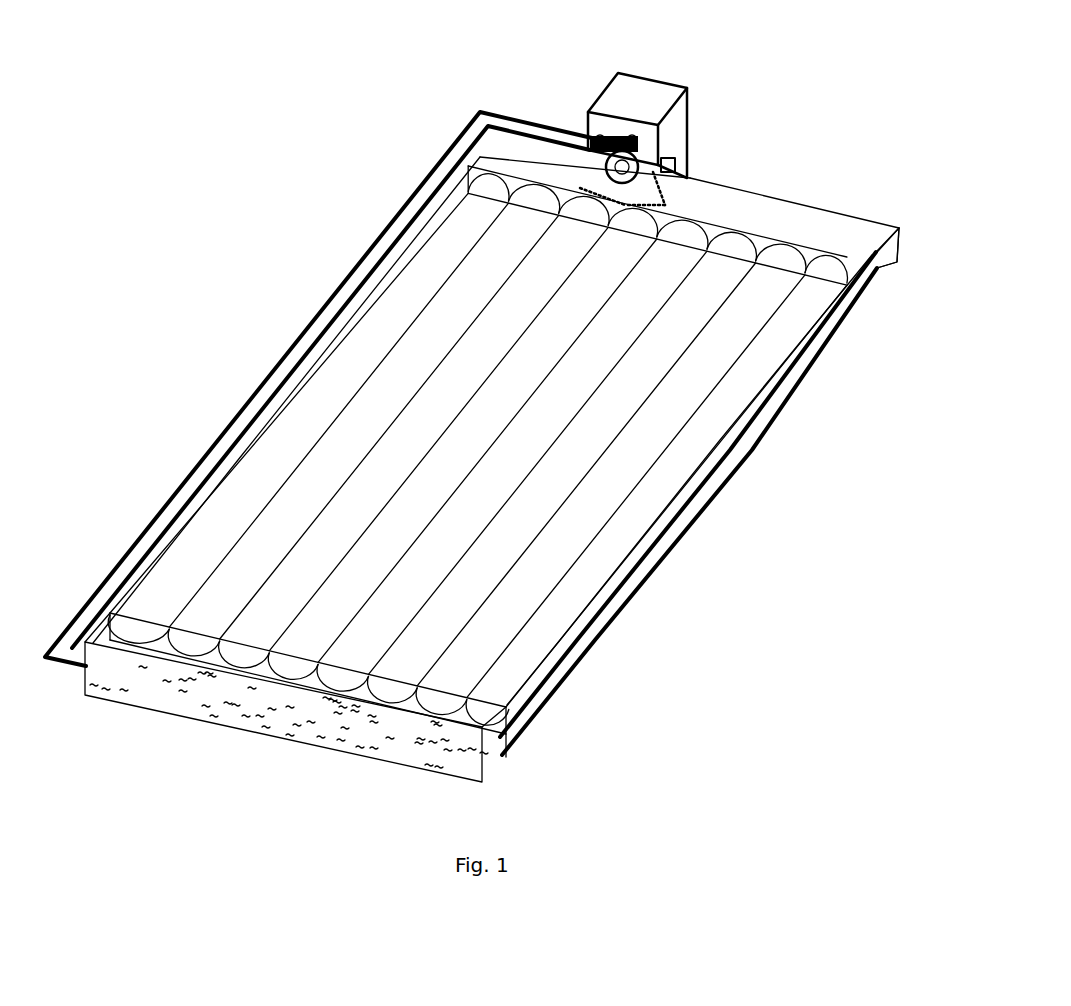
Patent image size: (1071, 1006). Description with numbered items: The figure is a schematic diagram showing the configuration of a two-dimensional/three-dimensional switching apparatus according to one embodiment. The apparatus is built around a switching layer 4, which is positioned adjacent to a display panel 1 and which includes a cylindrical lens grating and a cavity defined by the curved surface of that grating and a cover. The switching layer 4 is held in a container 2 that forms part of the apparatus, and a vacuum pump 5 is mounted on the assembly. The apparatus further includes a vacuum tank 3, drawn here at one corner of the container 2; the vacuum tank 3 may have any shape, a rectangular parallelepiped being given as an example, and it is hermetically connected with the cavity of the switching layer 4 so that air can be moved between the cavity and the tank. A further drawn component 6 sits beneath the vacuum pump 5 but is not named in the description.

The display panel 1 is at (572, 668).
The container 2 is at (483, 778).
The vacuum tank 3 is at (870, 232).
The switching layer 4 is at (597, 602).
The vacuum pump 5 is at (648, 98).
The drive mechanism 6 is at (592, 110).